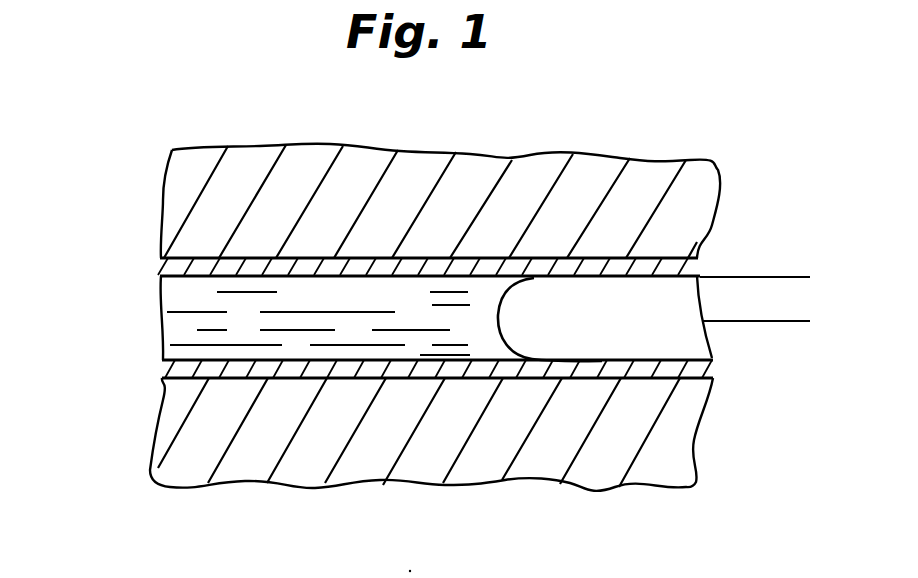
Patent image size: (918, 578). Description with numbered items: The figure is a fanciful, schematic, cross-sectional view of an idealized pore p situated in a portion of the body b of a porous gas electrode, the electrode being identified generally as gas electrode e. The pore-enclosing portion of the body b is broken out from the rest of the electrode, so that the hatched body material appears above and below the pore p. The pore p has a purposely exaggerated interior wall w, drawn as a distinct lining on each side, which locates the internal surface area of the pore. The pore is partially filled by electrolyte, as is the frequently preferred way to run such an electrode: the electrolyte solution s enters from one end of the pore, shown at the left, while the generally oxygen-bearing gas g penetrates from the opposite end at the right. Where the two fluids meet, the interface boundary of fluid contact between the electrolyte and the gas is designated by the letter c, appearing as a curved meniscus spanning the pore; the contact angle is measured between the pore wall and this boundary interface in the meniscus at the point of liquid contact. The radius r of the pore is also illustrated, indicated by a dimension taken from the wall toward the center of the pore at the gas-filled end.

The body b is at (353, 177).
The gas electrode e is at (489, 141).
The interior wall w is at (360, 258).
The electrolyte solution s is at (363, 340).
The opening o is at (522, 276).
The interface boundary c is at (513, 336).
The gas g is at (637, 340).
The pore p is at (152, 345).
The radius r is at (762, 279).